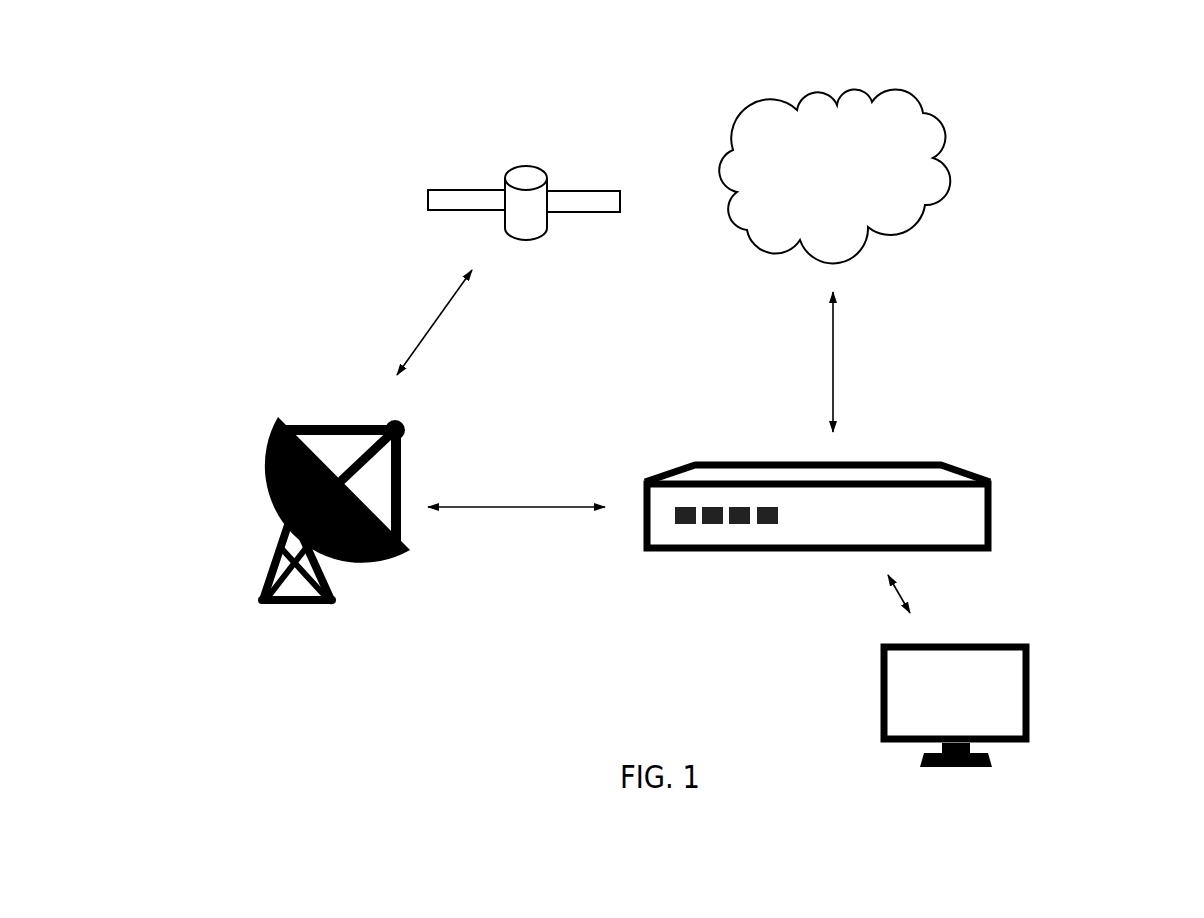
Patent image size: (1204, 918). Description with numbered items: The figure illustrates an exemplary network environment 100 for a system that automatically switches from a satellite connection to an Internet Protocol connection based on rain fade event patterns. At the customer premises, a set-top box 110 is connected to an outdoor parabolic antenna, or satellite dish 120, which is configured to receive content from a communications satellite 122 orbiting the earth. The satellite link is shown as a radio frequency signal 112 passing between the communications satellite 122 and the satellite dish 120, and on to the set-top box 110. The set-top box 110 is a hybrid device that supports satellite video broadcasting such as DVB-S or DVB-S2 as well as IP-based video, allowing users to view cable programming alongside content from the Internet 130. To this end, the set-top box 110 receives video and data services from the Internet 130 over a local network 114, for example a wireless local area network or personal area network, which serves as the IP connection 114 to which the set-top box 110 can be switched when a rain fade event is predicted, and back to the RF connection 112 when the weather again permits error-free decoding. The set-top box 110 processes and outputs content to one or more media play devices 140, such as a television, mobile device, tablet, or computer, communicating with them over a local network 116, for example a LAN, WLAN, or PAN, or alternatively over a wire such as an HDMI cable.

The network environment 100 is at (1103, 36).
The set-top box 110 is at (1030, 490).
The radio frequency (RF) signal 112 is at (368, 290).
The local network 114 is at (892, 366).
The local network 116 is at (925, 598).
The outdoor parabolic antenna 120 is at (253, 430).
The communications satellite 122 is at (465, 130).
The Internet 130 is at (988, 180).
The media play device 140 is at (1057, 665).